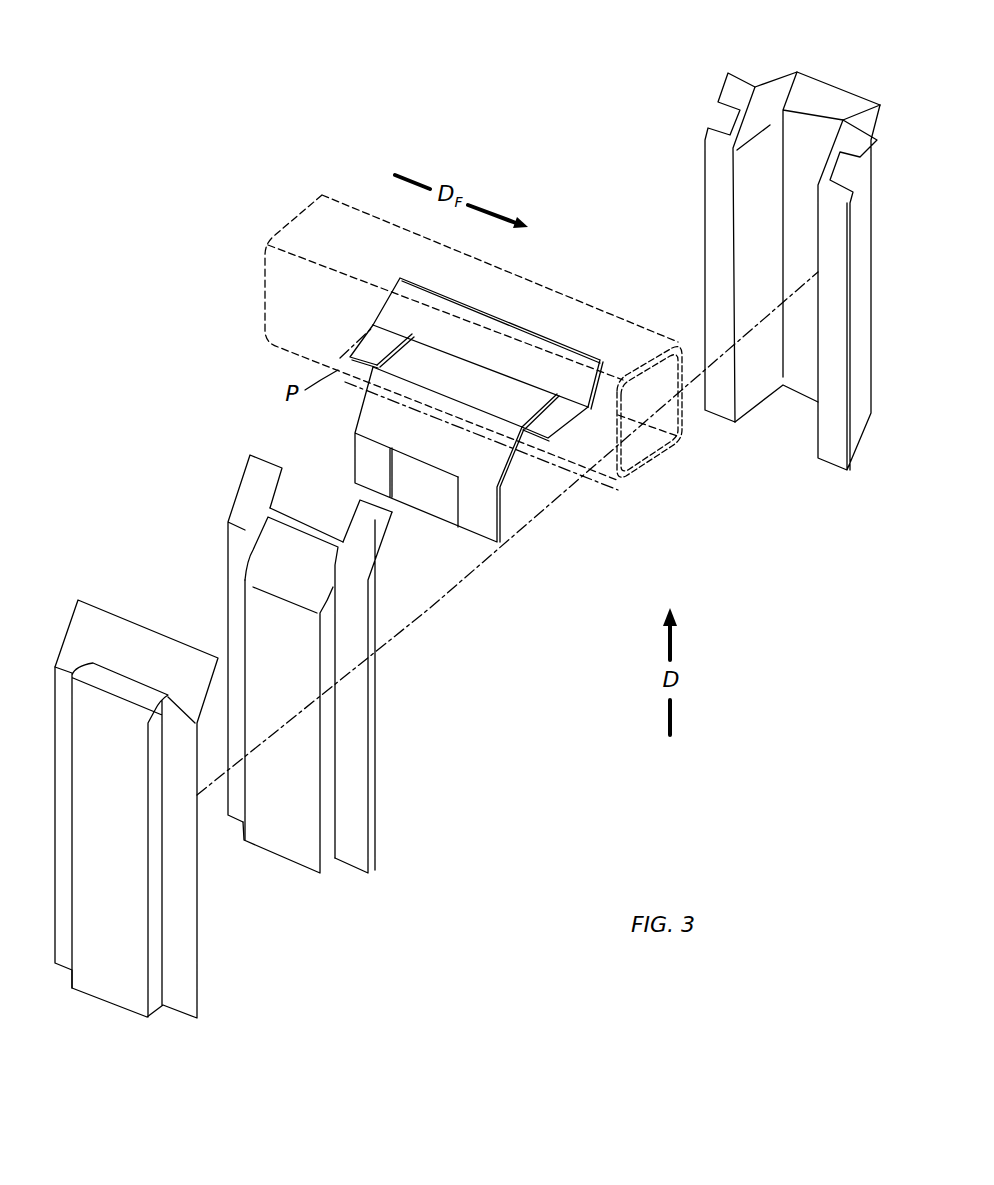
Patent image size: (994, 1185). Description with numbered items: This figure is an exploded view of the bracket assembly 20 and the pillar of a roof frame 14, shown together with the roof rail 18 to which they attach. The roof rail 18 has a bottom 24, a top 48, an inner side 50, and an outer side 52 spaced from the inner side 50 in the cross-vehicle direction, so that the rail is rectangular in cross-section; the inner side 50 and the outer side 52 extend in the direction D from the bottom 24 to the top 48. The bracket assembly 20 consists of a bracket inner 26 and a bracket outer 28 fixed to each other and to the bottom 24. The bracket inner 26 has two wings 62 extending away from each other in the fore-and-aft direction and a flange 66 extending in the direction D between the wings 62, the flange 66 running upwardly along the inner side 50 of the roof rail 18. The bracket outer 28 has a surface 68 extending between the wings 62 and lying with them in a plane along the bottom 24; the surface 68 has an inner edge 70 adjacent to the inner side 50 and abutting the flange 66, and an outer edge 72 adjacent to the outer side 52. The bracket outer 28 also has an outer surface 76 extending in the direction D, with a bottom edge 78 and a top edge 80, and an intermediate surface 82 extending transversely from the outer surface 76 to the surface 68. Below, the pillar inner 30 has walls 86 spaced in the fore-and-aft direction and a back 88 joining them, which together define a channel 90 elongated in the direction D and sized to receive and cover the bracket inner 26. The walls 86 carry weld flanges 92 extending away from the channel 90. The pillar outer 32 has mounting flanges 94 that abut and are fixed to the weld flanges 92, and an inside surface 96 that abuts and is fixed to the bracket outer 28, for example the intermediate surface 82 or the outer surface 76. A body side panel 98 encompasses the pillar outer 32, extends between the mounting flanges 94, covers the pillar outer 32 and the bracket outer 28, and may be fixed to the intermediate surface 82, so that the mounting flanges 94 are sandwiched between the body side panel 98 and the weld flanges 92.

The roof frame 14 is at (553, 240).
The roof rail 18 is at (580, 292).
The bracket assembly 20 is at (410, 266).
The bottom 24 is at (650, 473).
The bracket inner 26 is at (480, 303).
The bracket outer 28 is at (492, 364).
The pillar inner 30 is at (884, 276).
The pillar outer 32 is at (210, 533).
The top 48 is at (647, 360).
The inner side 50 is at (687, 407).
The outer side 52 is at (262, 242).
The wings 62 is at (362, 326).
The flange 66 is at (563, 342).
The surface 68 is at (449, 391).
The inner edge 70 is at (433, 342).
The outer edge 72 is at (397, 380).
The outer surface 76 is at (467, 521).
The bottom edge 78 is at (468, 528).
The top edge 80 is at (497, 482).
The intermediate surface 82 is at (419, 450).
The walls 86 is at (737, 187).
The back 88 is at (863, 90).
The channel 90 is at (802, 134).
The weld flanges 92 is at (704, 186).
The mounting flanges 94 is at (227, 583).
The inside surface 96 is at (372, 598).
The body side panel 98 is at (198, 933).